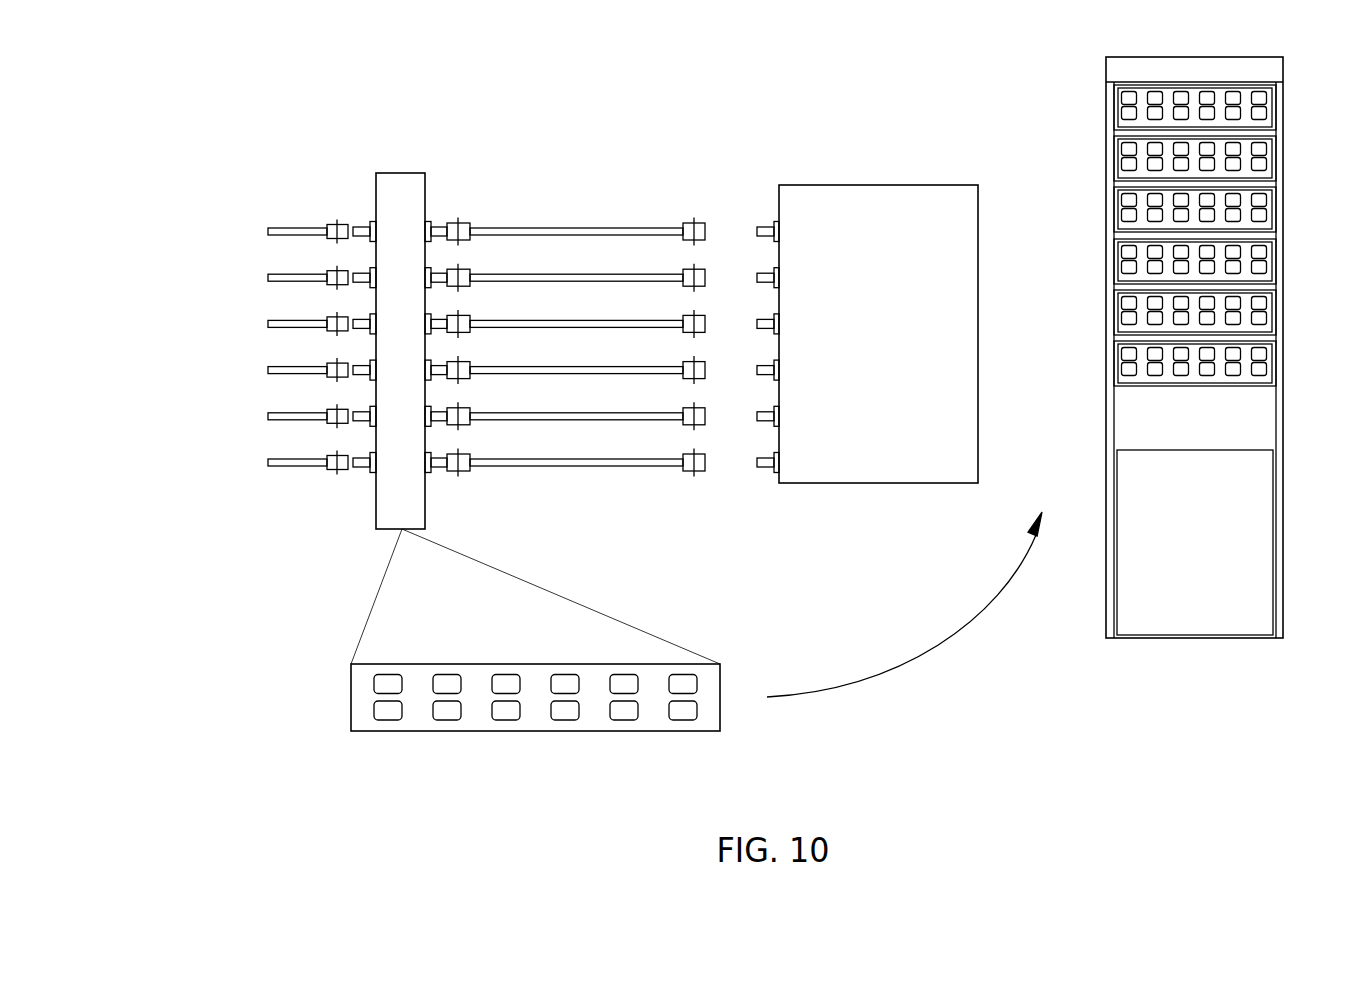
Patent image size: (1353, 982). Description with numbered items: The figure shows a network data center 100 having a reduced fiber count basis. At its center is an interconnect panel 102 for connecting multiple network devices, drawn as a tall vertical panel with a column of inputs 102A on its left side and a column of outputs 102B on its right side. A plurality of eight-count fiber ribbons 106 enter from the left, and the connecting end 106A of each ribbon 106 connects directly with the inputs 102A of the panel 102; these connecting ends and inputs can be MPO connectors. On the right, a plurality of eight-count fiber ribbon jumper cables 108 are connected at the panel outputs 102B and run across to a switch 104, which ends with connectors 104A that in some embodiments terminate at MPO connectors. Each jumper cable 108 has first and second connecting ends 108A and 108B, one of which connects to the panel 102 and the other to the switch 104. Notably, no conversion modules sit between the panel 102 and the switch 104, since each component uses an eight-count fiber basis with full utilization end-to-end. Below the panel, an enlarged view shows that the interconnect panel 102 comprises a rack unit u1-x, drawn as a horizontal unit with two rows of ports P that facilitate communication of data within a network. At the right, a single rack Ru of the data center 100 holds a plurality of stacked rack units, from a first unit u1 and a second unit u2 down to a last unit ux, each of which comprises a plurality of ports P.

The network data center 100 is at (520, 80).
The interconnect panel 102 is at (400, 172).
The inputs 102A is at (352, 205).
The outputs 102B is at (442, 205).
The switch 104 is at (929, 197).
The connectors 104A is at (754, 206).
The fiber ribbon 106 is at (248, 209).
The connecting end 106A is at (327, 240).
The jumper cable 108 is at (611, 202).
The first connecting end 108A is at (687, 492).
The second connecting end 108B is at (482, 478).
The rack unit u1-x is at (333, 691).
The rack Ru is at (1052, 80).
The first rack unit u1 is at (1243, 117).
The second rack unit u2 is at (1243, 168).
The last rack unit ux is at (1262, 377).
The ports P is at (1122, 213).